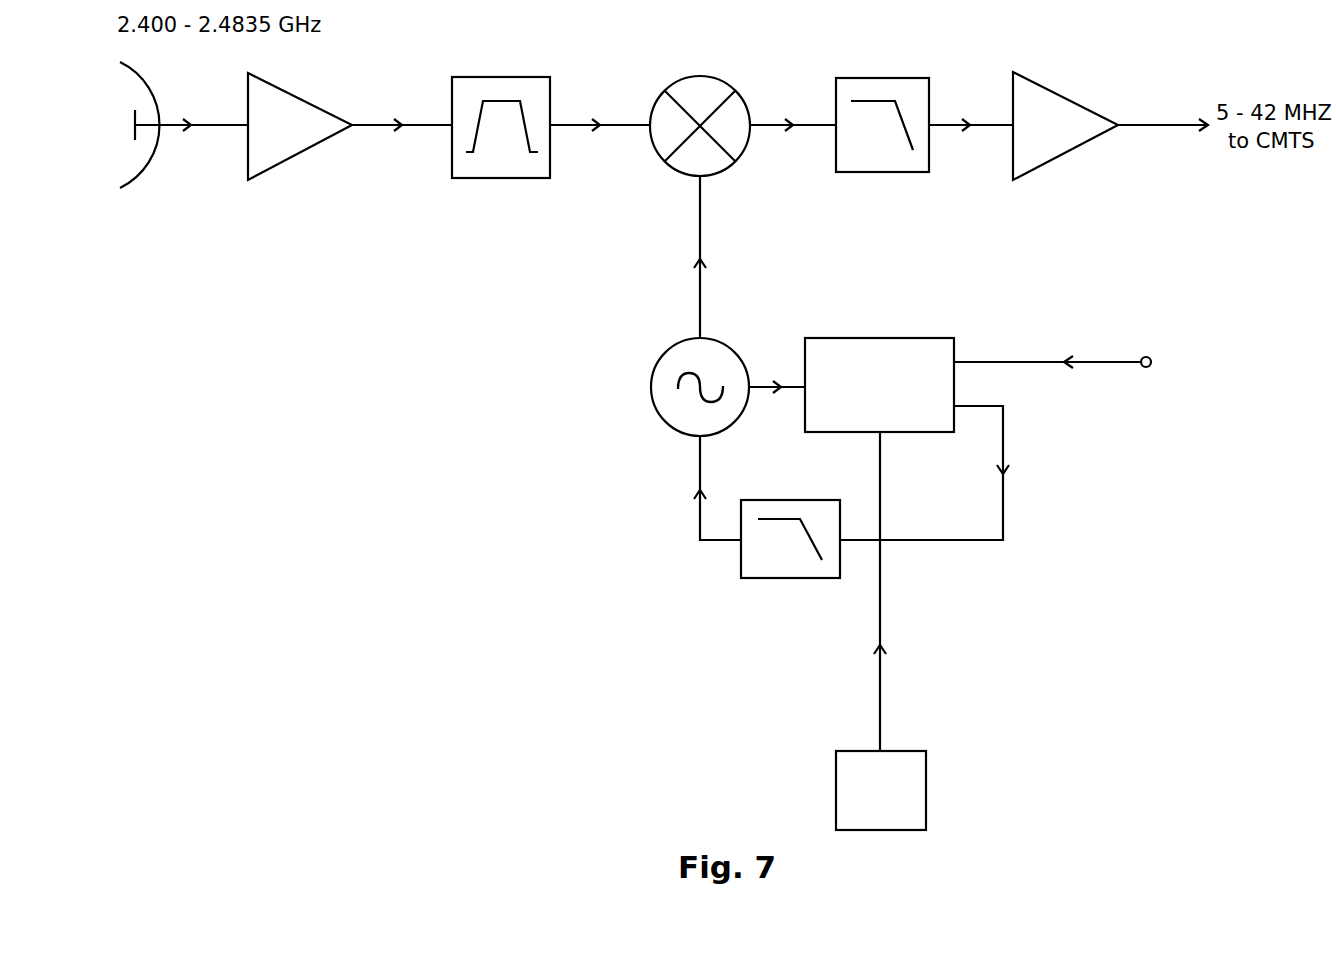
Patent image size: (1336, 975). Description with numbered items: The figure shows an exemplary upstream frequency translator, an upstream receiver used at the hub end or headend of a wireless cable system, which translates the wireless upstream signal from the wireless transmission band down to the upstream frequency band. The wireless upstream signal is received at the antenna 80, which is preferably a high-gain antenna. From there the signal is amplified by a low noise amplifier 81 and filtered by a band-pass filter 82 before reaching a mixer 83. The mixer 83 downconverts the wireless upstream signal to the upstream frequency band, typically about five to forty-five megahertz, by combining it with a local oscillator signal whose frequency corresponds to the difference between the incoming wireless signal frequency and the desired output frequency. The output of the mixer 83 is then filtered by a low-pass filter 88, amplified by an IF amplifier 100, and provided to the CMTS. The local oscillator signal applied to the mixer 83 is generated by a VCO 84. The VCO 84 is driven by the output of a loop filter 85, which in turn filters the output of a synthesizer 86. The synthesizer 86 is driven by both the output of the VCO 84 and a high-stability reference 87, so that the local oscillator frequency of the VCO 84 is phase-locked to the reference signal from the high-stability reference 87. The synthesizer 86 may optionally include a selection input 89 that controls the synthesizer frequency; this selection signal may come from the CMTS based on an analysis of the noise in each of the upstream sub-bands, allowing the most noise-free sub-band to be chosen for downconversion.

The antenna 80 is at (143, 67).
The low noise amplifier 81 is at (298, 93).
The band-pass filter 82 is at (537, 77).
The mixer 83 is at (720, 80).
The VCO 84 is at (718, 338).
The loop filter 85 is at (805, 500).
The synthesizer 86 is at (905, 338).
The high-stability reference 87 is at (910, 751).
The low-pass filter 88 is at (895, 78).
The selection input 89 is at (1097, 362).
The IF amplifier 100 is at (1058, 90).